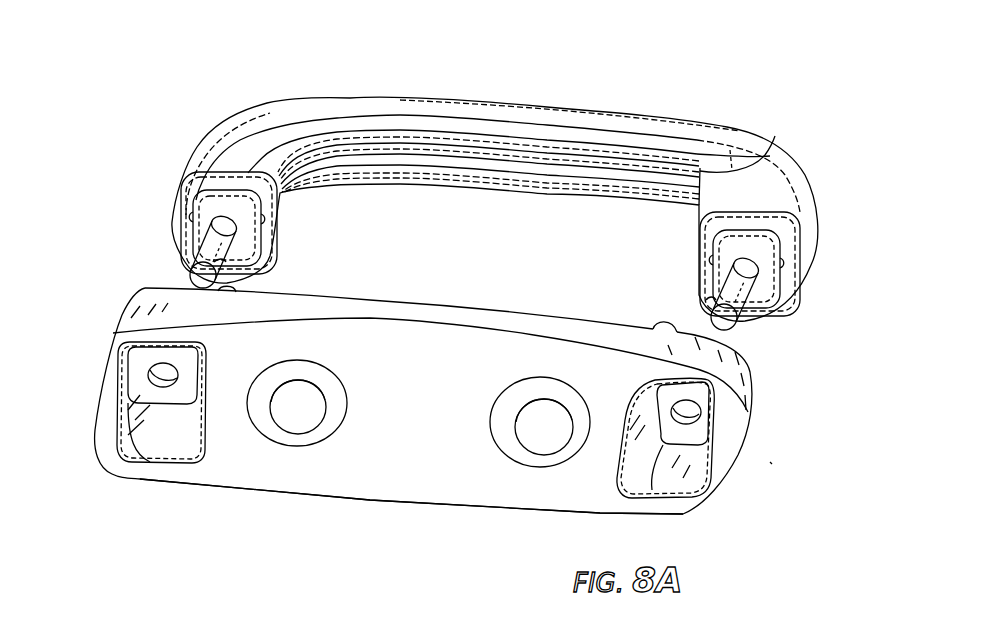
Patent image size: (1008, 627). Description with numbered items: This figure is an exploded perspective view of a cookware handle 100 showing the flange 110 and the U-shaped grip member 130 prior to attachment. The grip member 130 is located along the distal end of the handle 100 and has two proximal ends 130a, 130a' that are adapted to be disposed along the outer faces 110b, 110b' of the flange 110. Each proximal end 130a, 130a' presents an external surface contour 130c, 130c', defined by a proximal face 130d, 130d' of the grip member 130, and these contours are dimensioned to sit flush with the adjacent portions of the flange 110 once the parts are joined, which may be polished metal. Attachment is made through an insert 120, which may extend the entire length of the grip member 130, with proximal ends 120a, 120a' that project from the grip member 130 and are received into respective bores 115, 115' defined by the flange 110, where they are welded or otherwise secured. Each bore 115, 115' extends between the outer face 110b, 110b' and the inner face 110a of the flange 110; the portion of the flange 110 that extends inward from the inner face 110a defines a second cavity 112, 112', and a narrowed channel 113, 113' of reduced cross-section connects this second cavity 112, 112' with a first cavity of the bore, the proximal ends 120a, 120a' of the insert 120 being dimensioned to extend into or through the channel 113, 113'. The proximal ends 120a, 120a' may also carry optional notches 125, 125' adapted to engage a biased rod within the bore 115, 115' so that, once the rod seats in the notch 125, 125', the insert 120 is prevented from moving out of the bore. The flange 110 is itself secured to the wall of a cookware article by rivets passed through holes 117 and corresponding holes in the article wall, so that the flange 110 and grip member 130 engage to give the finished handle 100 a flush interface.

The handle 100 is at (766, 459).
The flange 110 is at (363, 488).
The inner face 110a is at (430, 495).
The outer face 110b is at (430, 340).
The outer face 110b' is at (607, 301).
The second cavity 112 is at (161, 444).
The second cavity 112' is at (694, 461).
The narrowed channel 113 is at (123, 375).
The narrowed channel 113' is at (739, 414).
The bore 115 is at (98, 464).
The bore 115' is at (709, 464).
The hole 117 is at (297, 437).
The insert 120 is at (188, 279).
The proximal end of insert 120a is at (149, 261).
The proximal end of insert 120a' is at (787, 338).
The notch 125 is at (290, 254).
The notch 125' is at (666, 281).
The grip member 130 is at (627, 120).
The proximal end of grip member 130a is at (169, 208).
The proximal end of grip member 130a' is at (789, 217).
The external surface contour 130c is at (274, 228).
The external surface contour 130c' is at (791, 286).
The proximal face of grip member 130d is at (282, 223).
The proximal face of grip member 130d' is at (698, 260).